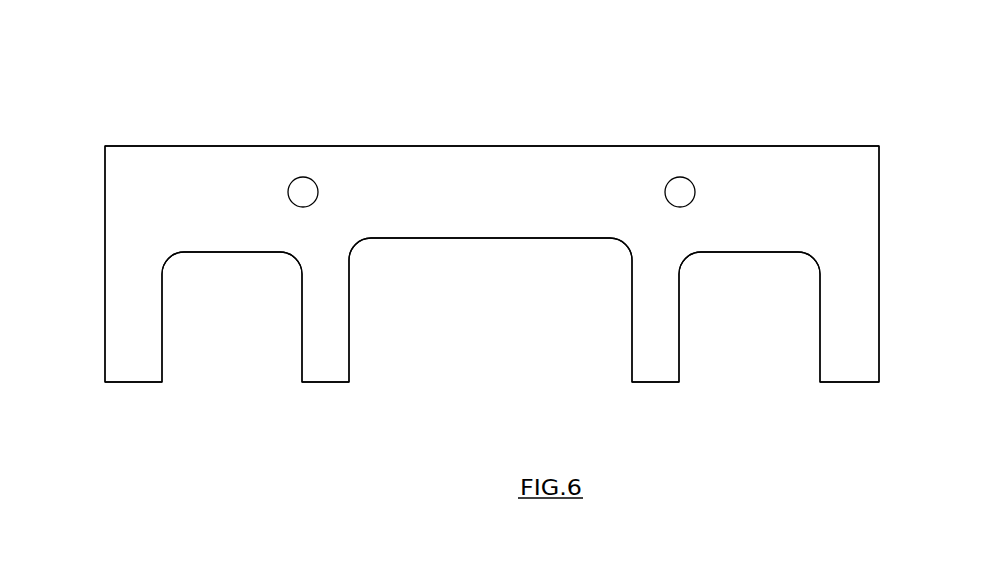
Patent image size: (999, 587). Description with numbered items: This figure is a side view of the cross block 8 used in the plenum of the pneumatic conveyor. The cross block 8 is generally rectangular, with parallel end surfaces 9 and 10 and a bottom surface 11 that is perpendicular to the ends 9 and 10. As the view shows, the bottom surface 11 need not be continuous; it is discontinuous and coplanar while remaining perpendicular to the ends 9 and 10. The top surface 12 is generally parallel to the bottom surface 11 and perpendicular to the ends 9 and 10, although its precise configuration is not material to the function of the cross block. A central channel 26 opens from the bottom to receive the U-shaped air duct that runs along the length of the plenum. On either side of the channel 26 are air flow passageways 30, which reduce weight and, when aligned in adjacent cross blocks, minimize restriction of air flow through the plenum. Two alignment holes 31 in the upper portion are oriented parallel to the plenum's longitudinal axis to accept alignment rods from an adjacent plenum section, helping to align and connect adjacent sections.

The cross block 8 is at (492, 212).
The end surface 9 is at (920, 264).
The end surface 10 is at (81, 262).
The top surface 12 is at (492, 104).
The alignment holes 31 is at (491, 135).
The air flow passageways 30 is at (242, 318).
The channel 26 is at (505, 318).
The bottom surface 11 is at (539, 435).